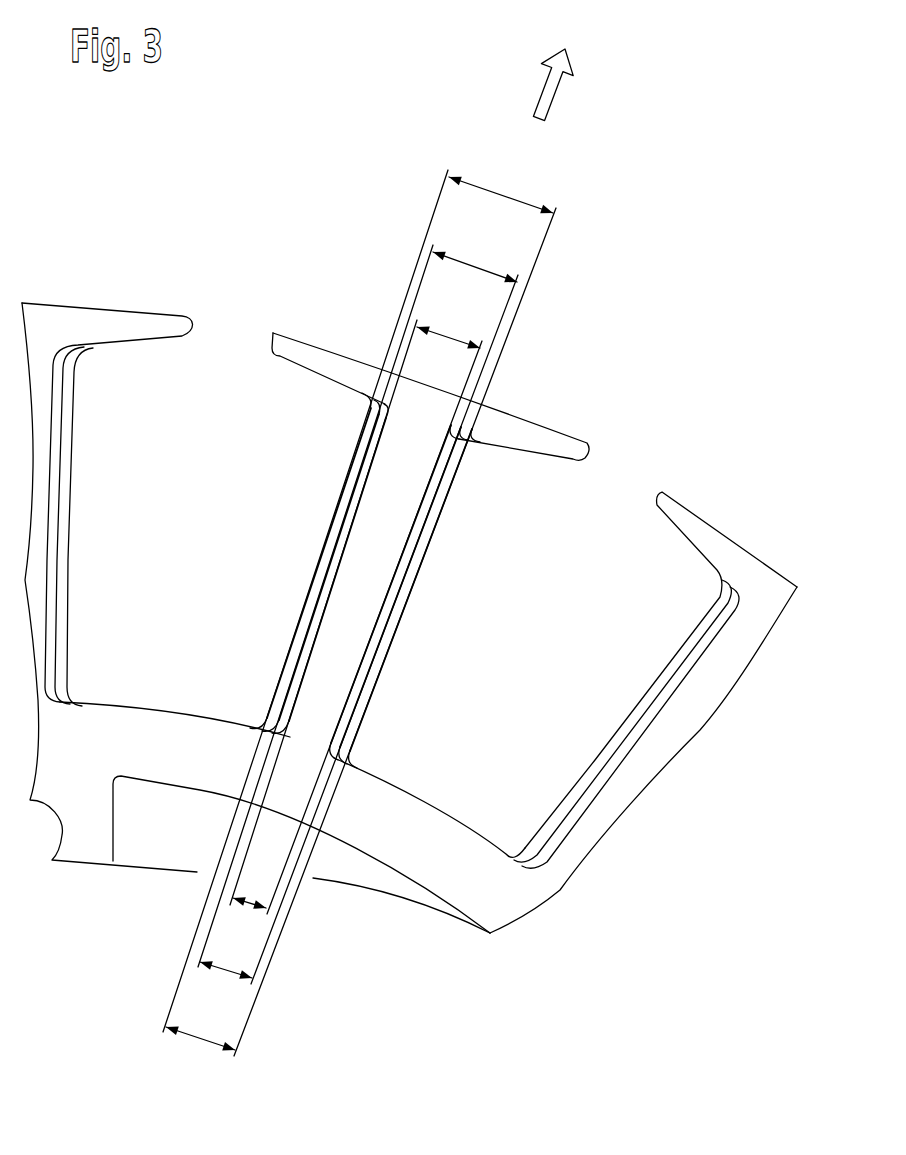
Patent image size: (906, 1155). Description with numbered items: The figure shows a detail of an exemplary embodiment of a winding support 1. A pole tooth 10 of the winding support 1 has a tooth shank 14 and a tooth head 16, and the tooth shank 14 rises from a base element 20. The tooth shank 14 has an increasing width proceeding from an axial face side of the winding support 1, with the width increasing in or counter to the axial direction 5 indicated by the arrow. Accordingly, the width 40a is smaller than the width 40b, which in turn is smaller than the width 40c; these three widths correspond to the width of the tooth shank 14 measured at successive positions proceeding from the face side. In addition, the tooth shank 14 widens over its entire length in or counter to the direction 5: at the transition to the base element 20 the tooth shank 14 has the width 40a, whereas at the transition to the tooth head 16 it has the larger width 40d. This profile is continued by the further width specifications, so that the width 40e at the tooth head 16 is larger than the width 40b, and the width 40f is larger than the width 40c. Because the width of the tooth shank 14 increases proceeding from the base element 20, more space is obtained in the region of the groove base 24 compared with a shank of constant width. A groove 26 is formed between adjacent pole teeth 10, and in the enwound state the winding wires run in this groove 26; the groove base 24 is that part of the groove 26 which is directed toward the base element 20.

The winding support 1 is at (243, 160).
The axial direction 5 is at (550, 88).
The pole tooth 10 is at (542, 418).
The tooth shank 14 is at (367, 562).
The tooth head 16 is at (337, 365).
The base element 20 is at (387, 822).
The groove base 24 is at (162, 673).
The groove 26 is at (128, 492).
The width 40a is at (244, 912).
The width 40b is at (216, 982).
The width 40c is at (195, 1052).
The width 40d is at (455, 335).
The width 40e is at (482, 264).
The width 40f is at (500, 192).